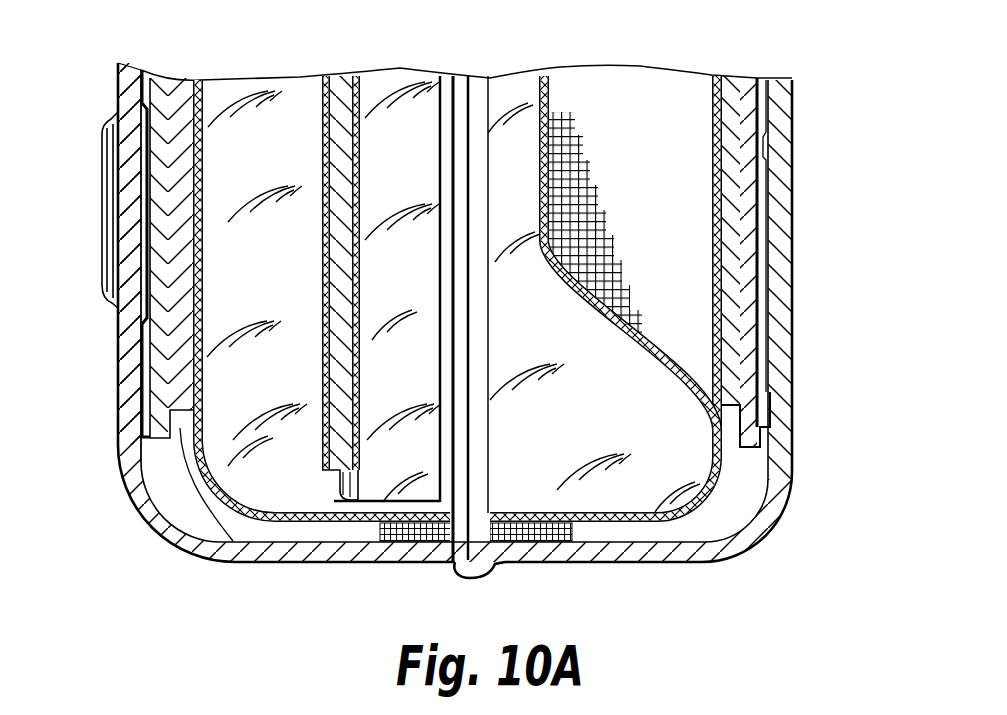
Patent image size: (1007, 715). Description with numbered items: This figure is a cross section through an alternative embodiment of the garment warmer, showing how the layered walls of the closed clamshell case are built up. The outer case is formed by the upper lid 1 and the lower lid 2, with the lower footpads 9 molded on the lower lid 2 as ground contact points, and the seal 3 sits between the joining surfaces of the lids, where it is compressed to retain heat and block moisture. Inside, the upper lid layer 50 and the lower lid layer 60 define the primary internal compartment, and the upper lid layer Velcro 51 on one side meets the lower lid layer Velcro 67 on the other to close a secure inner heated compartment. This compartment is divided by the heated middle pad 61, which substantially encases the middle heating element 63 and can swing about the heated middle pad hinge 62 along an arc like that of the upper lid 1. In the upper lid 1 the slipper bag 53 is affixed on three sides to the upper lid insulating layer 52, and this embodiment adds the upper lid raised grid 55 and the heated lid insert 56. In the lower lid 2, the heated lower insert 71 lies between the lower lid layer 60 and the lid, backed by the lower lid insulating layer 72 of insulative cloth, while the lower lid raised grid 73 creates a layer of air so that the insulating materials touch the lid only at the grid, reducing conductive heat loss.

The upper lid 1 is at (792, 110).
The lower lid 2 is at (118, 420).
The seal 3 is at (467, 543).
The lower footpads 9 is at (110, 173).
The upper lid layer 50 is at (657, 525).
The upper lid layer Velcro 51 is at (550, 537).
The upper lid insulating layer 52 is at (789, 496).
The slipper bag 53 is at (547, 113).
The upper lid raised grid 55 is at (757, 372).
The heated lid insert 56 is at (729, 410).
The lower lid layer 60 is at (200, 478).
The heated middle pad 61 is at (320, 458).
The heated middle pad hinge 62 is at (395, 115).
The middle heating element 63 is at (325, 483).
The lower lid layer Velcro 67 is at (352, 535).
The heated lower insert 71 is at (178, 472).
The lower lid insulating layer 72 is at (121, 474).
The lower lid raised grid 73 is at (150, 322).